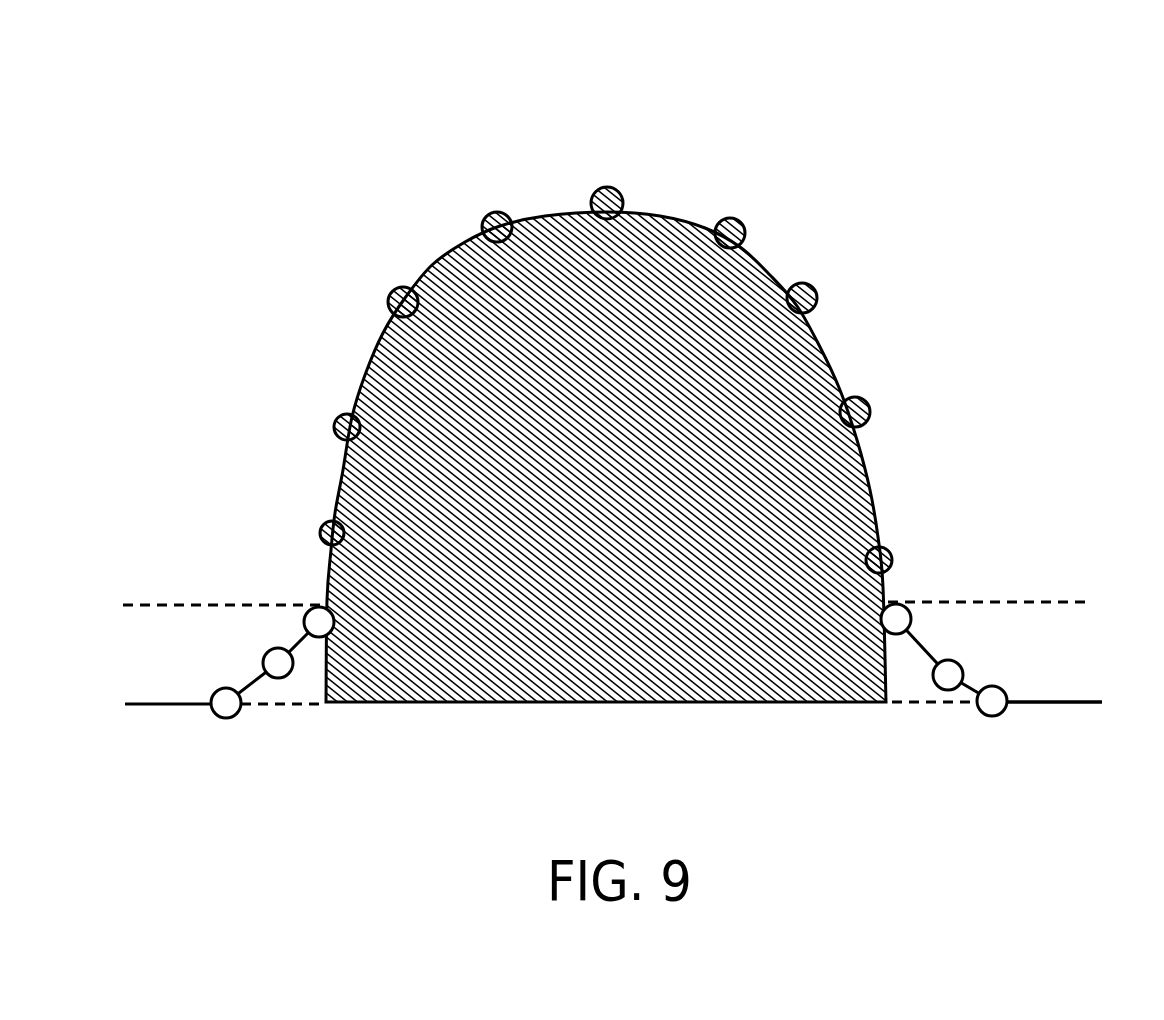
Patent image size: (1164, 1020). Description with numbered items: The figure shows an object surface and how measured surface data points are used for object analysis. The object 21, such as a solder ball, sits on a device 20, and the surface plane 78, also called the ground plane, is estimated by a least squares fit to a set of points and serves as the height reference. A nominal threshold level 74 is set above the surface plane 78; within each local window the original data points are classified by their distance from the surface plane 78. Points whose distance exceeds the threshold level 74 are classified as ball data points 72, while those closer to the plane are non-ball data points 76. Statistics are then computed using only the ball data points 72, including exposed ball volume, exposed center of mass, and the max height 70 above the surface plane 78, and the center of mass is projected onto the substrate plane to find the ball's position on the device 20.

The device 20 is at (1052, 705).
The object 21 is at (586, 376).
The max height 70 is at (623, 187).
The ball data points 72 is at (388, 297).
The threshold level 74 is at (140, 603).
The non-ball data points 76 is at (267, 650).
The surface plane 78 is at (1068, 702).